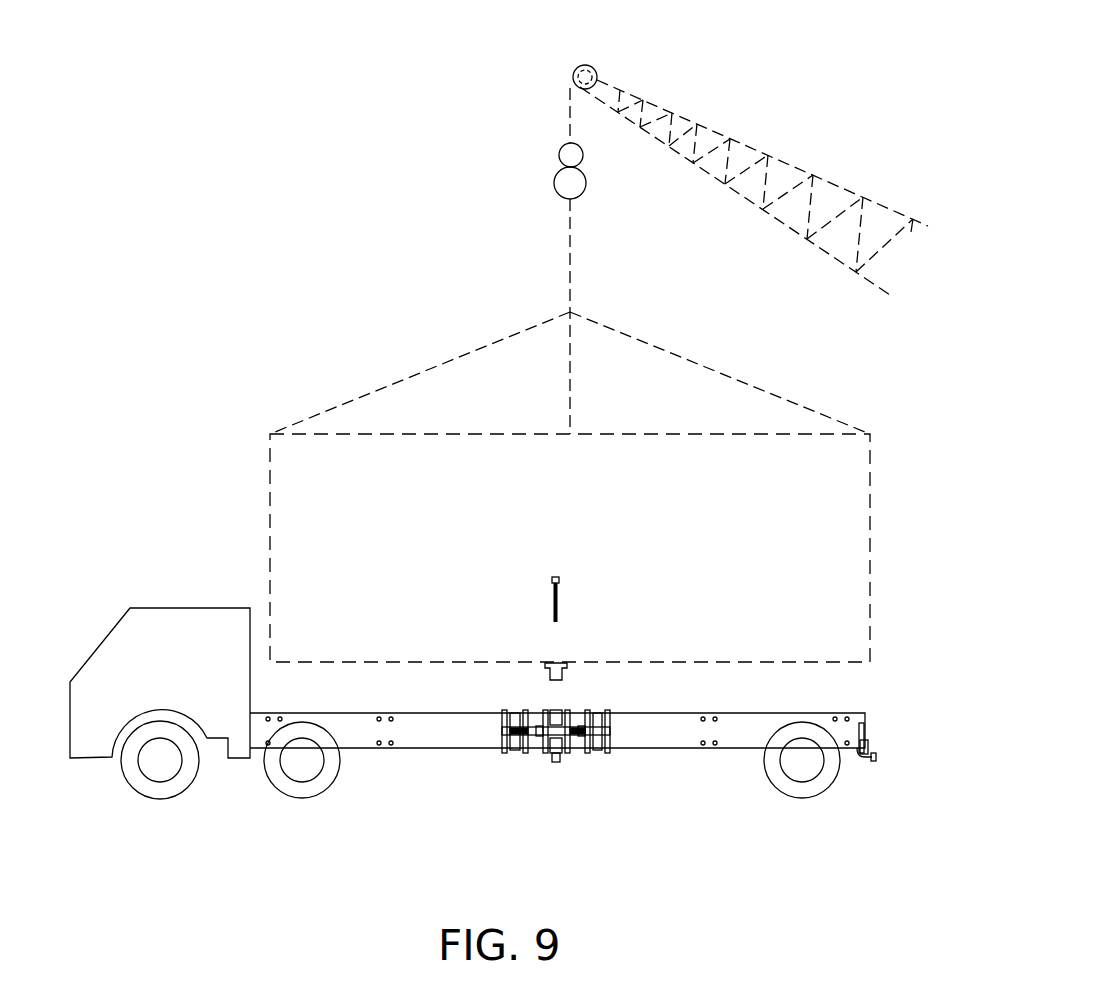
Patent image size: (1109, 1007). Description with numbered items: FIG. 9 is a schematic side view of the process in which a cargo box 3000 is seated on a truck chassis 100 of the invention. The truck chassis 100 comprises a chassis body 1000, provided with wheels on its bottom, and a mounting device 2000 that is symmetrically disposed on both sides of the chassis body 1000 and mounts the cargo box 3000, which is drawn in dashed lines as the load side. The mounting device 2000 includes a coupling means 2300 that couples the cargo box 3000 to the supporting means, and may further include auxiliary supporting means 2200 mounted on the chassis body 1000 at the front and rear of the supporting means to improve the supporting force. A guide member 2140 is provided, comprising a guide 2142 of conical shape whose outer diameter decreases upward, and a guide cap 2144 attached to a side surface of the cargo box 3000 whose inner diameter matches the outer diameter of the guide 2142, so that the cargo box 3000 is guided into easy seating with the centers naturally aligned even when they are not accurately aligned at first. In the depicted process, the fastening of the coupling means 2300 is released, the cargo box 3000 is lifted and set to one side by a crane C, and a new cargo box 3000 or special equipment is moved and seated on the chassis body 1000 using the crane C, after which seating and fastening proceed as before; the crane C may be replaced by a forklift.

The crane C is at (792, 160).
The cargo box 3000 is at (270, 498).
The coupling means 2300 is at (548, 593).
The truck chassis 100 is at (473, 741).
The chassis body 1000 is at (667, 750).
The mounting device 2000 is at (585, 717).
The auxiliary supporting means 2200 is at (512, 753).
The guide member 2140 is at (634, 671).
The guide 2142 is at (553, 712).
The guide cap 2144 is at (562, 677).